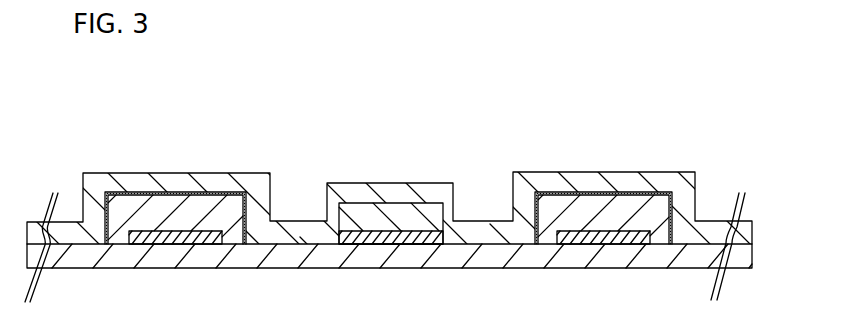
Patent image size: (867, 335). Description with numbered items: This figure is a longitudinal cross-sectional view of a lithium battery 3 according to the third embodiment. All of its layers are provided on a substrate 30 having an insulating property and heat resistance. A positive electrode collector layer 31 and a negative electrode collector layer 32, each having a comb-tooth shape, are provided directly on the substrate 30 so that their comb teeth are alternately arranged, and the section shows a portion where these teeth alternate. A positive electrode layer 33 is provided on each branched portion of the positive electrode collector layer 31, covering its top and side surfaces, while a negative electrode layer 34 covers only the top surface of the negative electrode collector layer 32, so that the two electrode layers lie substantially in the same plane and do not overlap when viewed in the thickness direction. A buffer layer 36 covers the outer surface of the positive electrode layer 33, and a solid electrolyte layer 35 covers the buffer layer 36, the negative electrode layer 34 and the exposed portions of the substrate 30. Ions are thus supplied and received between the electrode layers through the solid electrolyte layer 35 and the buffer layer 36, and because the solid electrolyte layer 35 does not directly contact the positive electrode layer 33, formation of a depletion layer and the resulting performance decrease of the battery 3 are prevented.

The lithium battery 3 is at (355, 146).
The substrate 30 is at (327, 262).
The positive electrode collector layer 31 is at (135, 232).
The negative electrode collector layer 32 is at (402, 232).
The positive electrode layer 33 is at (200, 198).
The negative electrode layer 34 is at (365, 207).
The solid electrolyte layer 35 is at (477, 231).
The buffer layer 36 is at (220, 192).